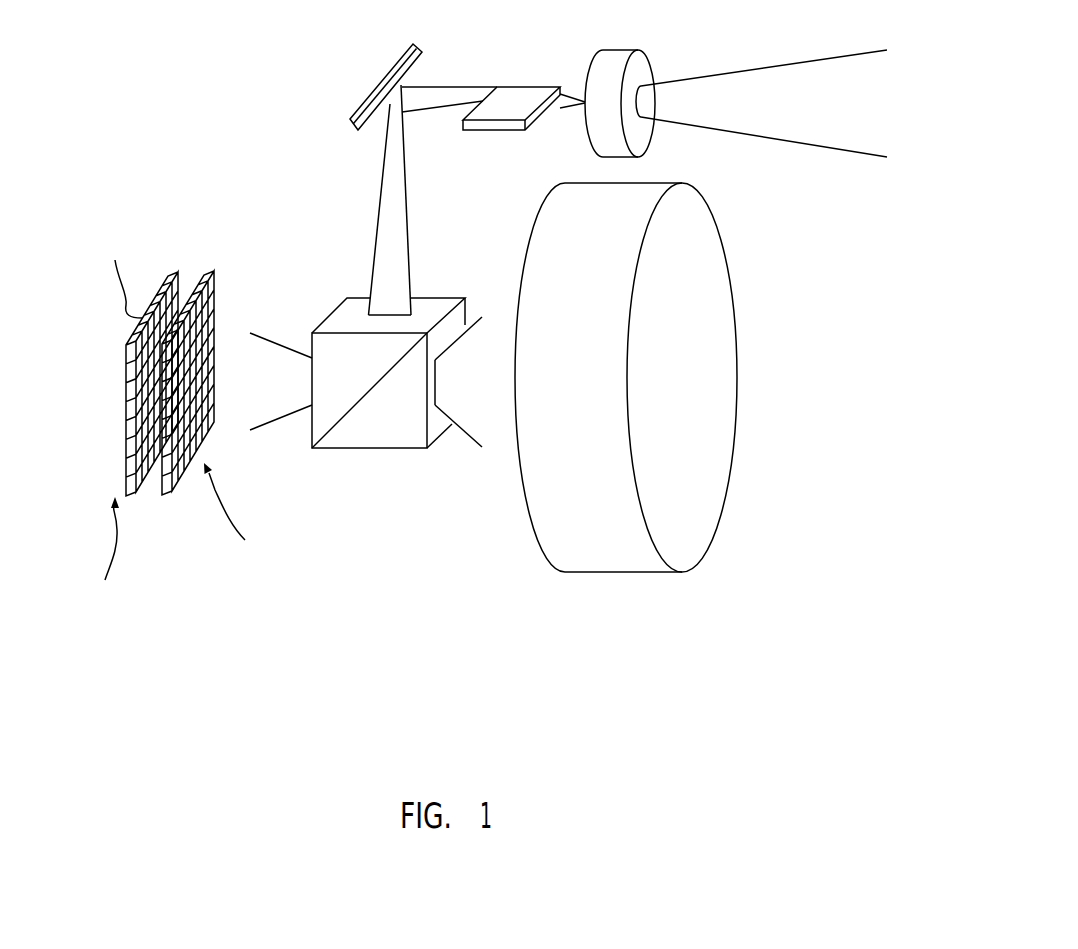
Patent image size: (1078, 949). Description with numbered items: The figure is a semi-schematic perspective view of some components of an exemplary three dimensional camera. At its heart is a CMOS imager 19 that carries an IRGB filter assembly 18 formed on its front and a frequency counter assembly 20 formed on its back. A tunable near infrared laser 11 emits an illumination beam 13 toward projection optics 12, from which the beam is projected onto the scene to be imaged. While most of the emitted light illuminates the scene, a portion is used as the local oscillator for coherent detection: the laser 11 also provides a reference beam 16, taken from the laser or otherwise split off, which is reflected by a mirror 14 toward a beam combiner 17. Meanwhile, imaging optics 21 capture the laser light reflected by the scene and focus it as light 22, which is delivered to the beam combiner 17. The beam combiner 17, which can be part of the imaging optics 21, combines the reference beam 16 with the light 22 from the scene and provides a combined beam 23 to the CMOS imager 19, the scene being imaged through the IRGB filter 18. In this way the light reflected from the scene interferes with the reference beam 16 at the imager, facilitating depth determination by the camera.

The tunable near infrared laser 11 is at (504, 84).
The projection optics 12 is at (656, 61).
The illumination beam 13 is at (842, 152).
The mirror 14 is at (393, 66).
The reference beam 16 is at (408, 203).
The beam combiner 17 is at (311, 433).
The IRGB filter assembly 18 is at (176, 493).
The CMOS imager 19 is at (139, 493).
The frequency counter assembly 20 is at (125, 463).
The imaging optics 21 is at (672, 573).
The light focused from the scene 22 is at (480, 318).
The combined beam 23 is at (272, 343).